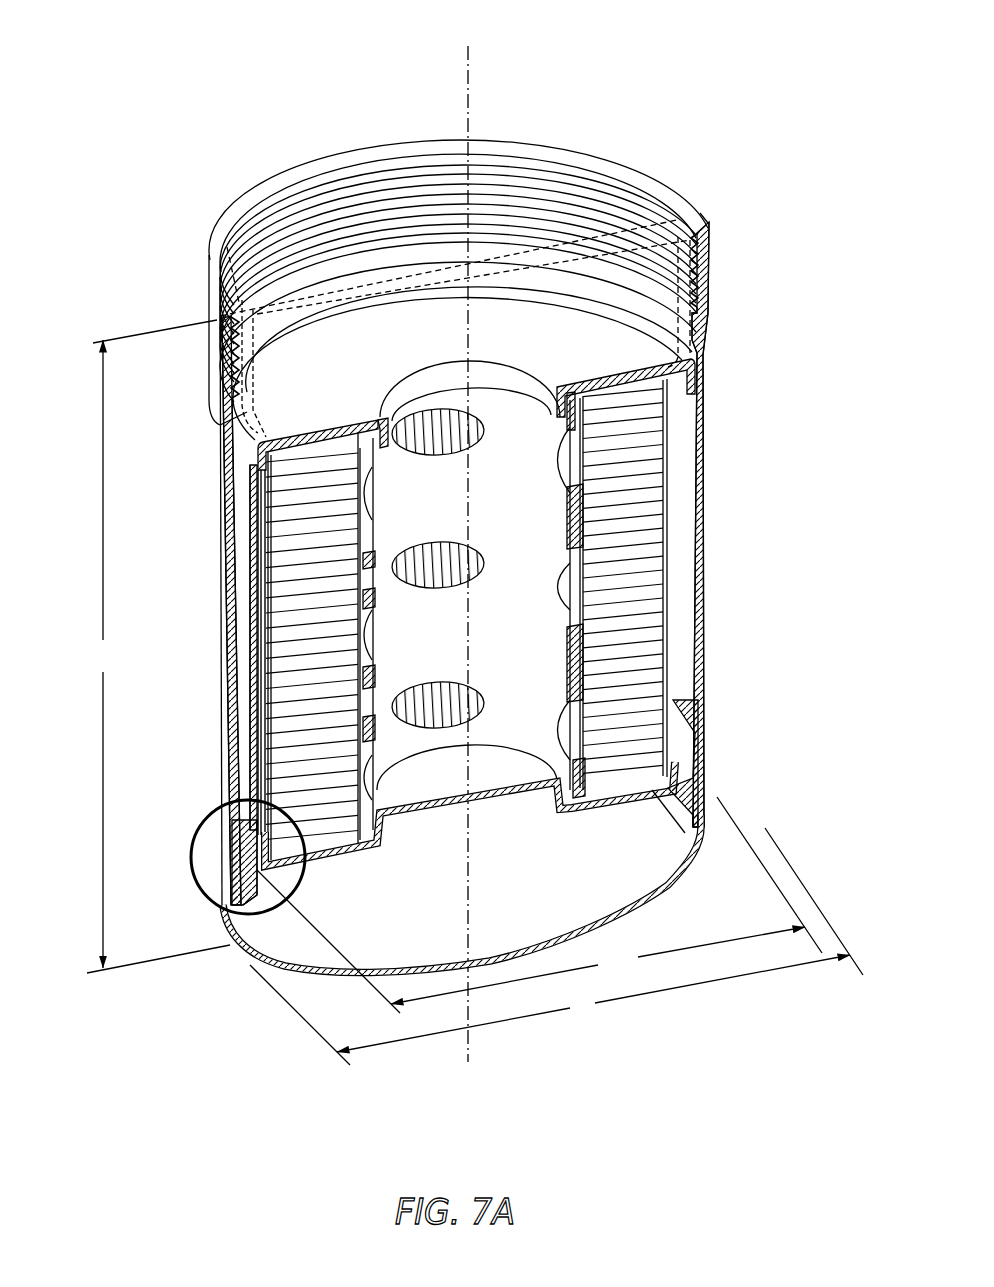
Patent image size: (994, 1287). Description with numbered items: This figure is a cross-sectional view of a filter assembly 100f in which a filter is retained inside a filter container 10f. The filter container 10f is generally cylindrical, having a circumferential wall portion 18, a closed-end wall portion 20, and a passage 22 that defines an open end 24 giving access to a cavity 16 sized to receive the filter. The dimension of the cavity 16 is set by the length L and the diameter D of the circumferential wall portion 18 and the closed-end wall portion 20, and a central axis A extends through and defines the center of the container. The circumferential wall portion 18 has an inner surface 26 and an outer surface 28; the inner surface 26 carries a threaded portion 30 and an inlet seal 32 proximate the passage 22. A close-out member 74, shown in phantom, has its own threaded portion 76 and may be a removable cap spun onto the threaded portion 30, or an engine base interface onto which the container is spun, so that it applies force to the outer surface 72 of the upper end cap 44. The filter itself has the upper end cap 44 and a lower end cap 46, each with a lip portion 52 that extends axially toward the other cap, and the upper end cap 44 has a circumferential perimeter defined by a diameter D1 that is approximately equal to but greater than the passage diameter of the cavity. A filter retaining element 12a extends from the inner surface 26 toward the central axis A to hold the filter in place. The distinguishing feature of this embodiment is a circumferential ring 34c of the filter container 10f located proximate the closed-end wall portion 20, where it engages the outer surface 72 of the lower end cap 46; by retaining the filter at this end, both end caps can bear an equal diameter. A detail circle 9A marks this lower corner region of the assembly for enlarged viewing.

The filter assembly 100f is at (650, 88).
The filter container 10f is at (773, 500).
The passage 22 is at (673, 210).
The open end 24 is at (698, 208).
The close-out member 74 is at (223, 237).
The inlet seal 32 is at (709, 322).
The upper end cap 44 is at (617, 361).
The threaded portion 76 is at (226, 352).
The threaded portion 30 is at (247, 412).
The lip portion 52 is at (255, 447).
The inner surface 26 is at (247, 595).
The circumferential wall portion 18 is at (223, 665).
The outer surface 28 is at (234, 727).
The detail view circle 9A is at (193, 843).
The cavity 16 is at (677, 555).
The filter retaining element 12a is at (677, 723).
The circumferential ring 34c is at (717, 760).
The lower end cap 46 is at (503, 820).
The outer surface 72 is at (313, 860).
The closed-end wall portion 20 is at (413, 909).
The length L is at (158, 646).
The diameter D1 is at (539, 905).
The diameter D is at (556, 946).
The central axis A is at (466, 555).